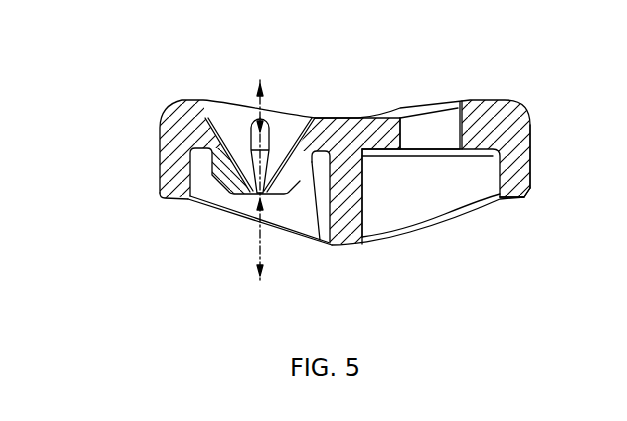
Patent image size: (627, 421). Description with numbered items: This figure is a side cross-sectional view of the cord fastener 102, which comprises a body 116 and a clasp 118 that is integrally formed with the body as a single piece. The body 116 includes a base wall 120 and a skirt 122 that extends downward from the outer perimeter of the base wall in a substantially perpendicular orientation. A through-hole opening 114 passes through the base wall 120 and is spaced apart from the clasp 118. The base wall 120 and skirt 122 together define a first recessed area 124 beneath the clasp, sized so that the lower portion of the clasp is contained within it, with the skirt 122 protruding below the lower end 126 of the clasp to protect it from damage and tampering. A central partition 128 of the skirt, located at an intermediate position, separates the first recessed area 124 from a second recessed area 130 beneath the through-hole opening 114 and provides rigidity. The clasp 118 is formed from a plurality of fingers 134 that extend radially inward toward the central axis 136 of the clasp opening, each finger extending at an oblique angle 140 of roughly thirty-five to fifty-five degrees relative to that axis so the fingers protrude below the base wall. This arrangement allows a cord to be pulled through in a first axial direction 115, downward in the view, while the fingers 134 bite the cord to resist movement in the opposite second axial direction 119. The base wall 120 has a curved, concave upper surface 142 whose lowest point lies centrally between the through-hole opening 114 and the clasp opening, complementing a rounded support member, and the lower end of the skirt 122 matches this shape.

The cord fastener 102 is at (155, 88).
The through-hole opening 114 is at (442, 116).
The first axial direction 115 is at (259, 258).
The body 116 is at (524, 157).
The clasp 118 is at (291, 122).
The second axial direction 119 is at (258, 101).
The base wall 120 is at (392, 135).
The skirt 122 is at (527, 180).
The first recessed area 124 is at (300, 238).
The lower end 126 is at (258, 193).
The central partition 128 is at (336, 218).
The second recessed area 130 is at (466, 220).
The fingers 134 is at (218, 206).
The central axis 136 is at (162, 169).
The oblique angle 140 is at (282, 172).
The upper surface 142 is at (481, 86).